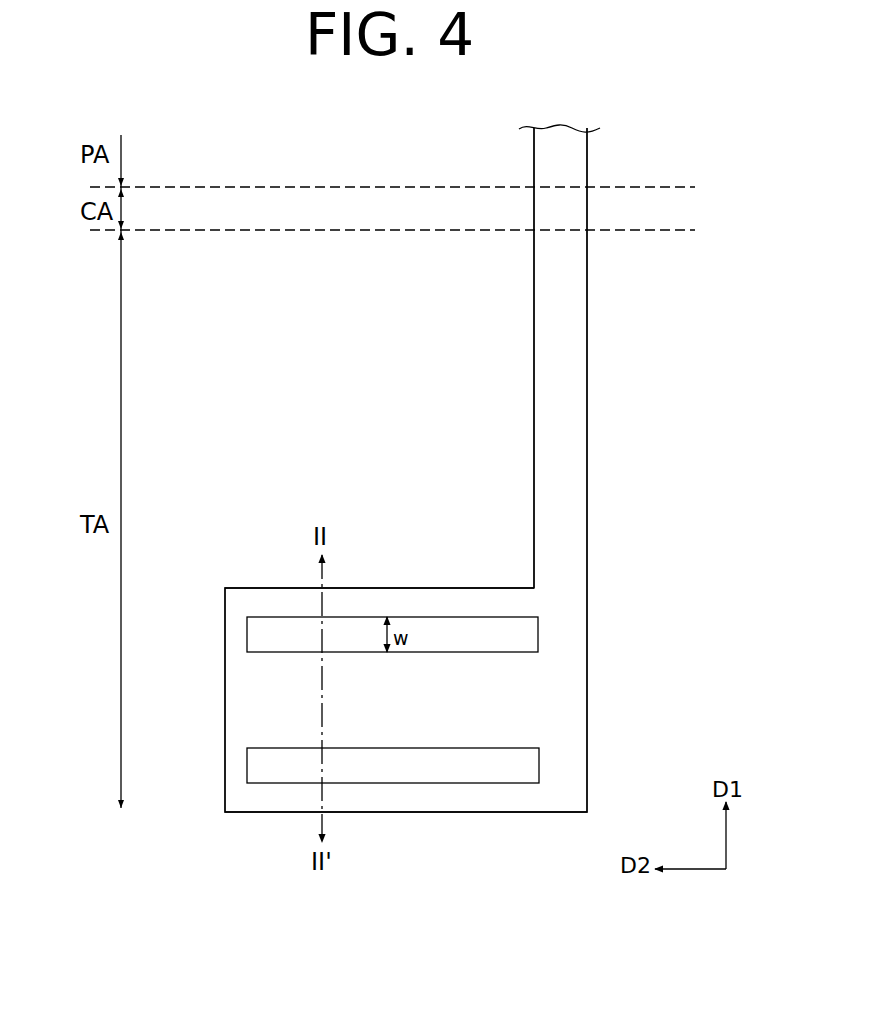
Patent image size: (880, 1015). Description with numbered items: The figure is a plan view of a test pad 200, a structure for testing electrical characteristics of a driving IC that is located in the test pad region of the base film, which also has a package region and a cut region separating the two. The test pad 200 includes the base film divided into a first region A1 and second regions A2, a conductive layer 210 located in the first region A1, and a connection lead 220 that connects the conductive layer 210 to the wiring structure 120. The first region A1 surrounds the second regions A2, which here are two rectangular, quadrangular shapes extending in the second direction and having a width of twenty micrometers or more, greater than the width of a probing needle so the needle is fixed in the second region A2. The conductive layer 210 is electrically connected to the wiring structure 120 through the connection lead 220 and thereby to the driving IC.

The wiring structure 120 is at (572, 149).
The test pad 200 is at (598, 547).
The connection lead 220 is at (579, 394).
The conductive layer 210 is at (579, 706).
The first region A1 is at (567, 640).
The second region A2 is at (515, 766).